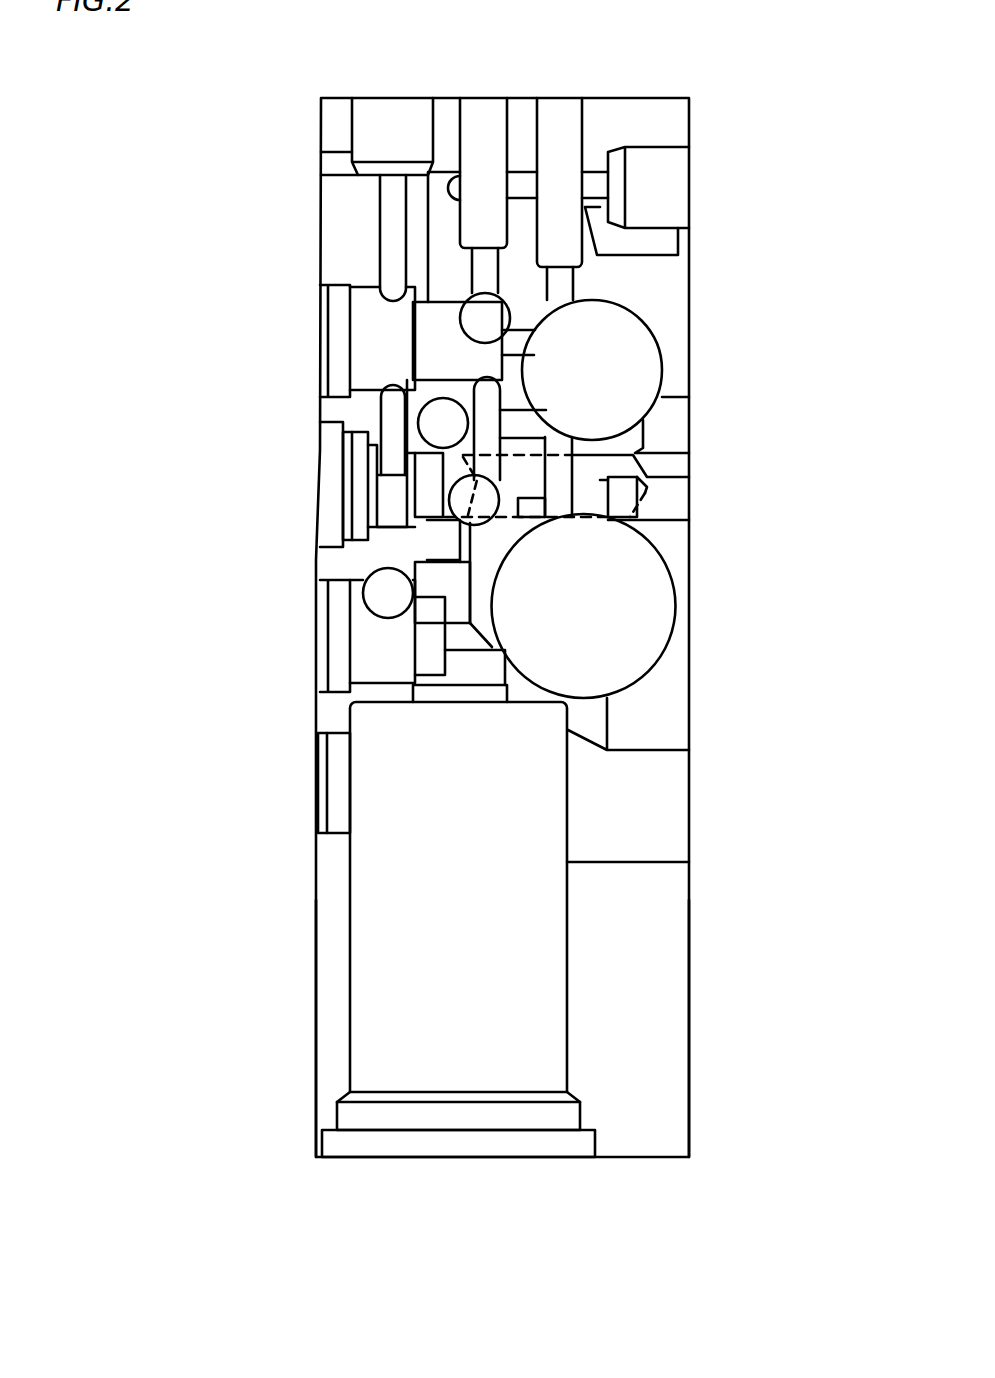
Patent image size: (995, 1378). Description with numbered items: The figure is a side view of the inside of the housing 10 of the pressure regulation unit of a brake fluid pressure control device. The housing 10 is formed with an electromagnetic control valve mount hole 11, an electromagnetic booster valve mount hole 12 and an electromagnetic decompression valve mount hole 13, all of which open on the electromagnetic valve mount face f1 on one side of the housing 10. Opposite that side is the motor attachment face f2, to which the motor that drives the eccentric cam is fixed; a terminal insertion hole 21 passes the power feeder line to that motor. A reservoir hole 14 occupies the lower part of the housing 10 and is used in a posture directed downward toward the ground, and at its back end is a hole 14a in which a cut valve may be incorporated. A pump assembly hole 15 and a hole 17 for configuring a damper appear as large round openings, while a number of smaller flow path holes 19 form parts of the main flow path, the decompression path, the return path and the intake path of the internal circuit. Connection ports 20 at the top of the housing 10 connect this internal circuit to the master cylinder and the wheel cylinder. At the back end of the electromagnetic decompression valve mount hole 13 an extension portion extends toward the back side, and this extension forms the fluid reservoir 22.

The housing 10 is at (672, 117).
The electromagnetic control valve mount hole 11 is at (365, 632).
The electromagnetic booster valve mount hole 12 is at (362, 347).
The electromagnetic decompression valve mount hole 13 is at (362, 492).
The reservoir hole 14 is at (477, 1060).
The hole at back end of reservoir hole 14a is at (463, 703).
The pump assembly hole 15 is at (622, 603).
The hole for configuring a damper 17 is at (615, 373).
The flow path holes 19 is at (558, 287).
The connection port 20 is at (390, 116).
The terminal insertion hole 21 is at (336, 786).
The fluid reservoir 22 is at (618, 467).
The electromagnetic valve mount face f1 is at (315, 1005).
The motor attachment face f2 is at (687, 993).